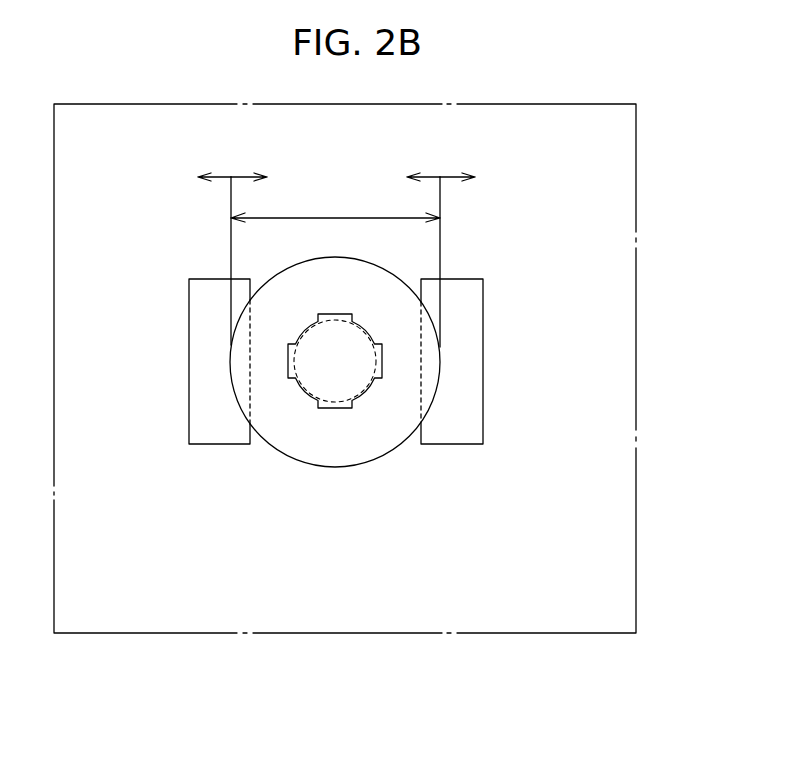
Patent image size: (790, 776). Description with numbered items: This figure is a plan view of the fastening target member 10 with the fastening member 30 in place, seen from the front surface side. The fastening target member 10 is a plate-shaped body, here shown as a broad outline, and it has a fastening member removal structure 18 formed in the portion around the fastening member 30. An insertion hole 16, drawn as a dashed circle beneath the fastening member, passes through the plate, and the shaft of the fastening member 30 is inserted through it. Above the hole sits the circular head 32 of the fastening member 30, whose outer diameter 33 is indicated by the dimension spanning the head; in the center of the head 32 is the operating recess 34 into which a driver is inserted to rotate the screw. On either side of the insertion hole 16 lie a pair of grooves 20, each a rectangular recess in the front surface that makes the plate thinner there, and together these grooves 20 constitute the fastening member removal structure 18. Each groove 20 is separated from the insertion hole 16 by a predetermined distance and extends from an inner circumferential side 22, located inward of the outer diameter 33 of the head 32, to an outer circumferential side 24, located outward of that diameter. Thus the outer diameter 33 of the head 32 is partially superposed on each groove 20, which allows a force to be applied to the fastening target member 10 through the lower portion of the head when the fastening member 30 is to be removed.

The fastening target member 10 is at (558, 155).
The insertion hole 16 is at (378, 331).
The fastening member removal structure 18 is at (391, 364).
The grooves 20 is at (207, 409).
The inner circumferential side 22 is at (335, 246).
The outer circumferential side 24 is at (338, 163).
The fastening member 30 is at (325, 408).
The head 32 is at (358, 448).
The outer diameter 33 is at (335, 206).
The operating recess 34 is at (315, 383).